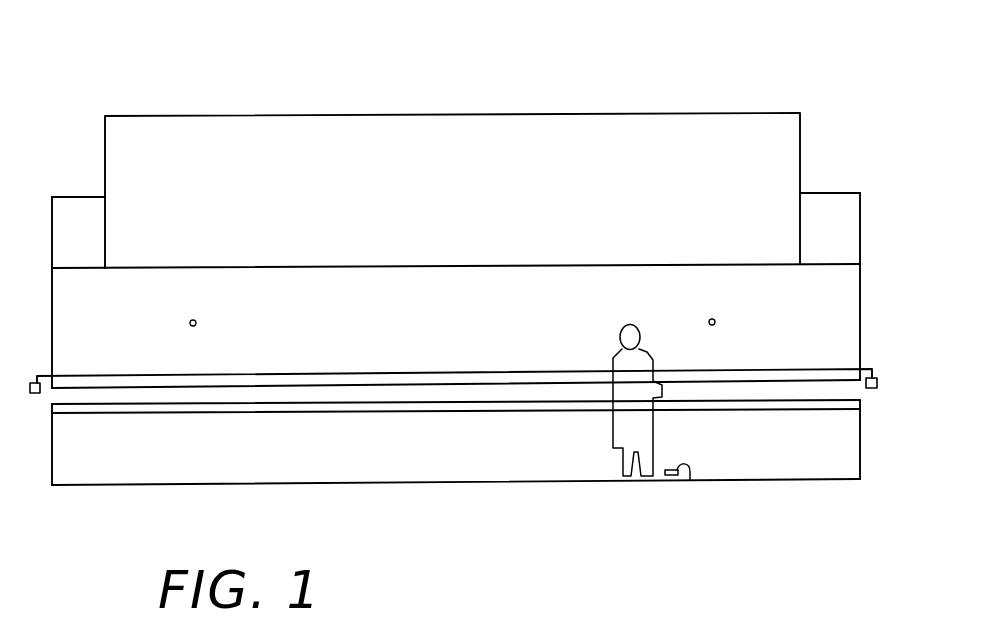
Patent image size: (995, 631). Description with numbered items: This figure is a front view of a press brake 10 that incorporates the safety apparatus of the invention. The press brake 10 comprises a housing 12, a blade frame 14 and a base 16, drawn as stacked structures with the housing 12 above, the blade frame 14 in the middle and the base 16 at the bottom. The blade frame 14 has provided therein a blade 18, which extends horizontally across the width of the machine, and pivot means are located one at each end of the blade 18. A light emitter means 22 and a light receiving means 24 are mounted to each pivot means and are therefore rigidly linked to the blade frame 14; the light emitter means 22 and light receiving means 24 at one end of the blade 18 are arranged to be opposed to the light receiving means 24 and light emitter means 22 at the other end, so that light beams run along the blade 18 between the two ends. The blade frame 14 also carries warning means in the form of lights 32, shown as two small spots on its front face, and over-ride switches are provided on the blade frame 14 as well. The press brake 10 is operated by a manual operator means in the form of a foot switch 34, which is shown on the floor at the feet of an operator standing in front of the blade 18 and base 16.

The press brake 10 is at (508, 60).
The housing 12 is at (622, 114).
The blade frame 14 is at (71, 197).
The base 16 is at (764, 480).
The blade 18 is at (319, 381).
The light emitter means 22 is at (34, 395).
The light receiving means 24 is at (877, 391).
The lights 32 is at (189, 321).
The foot switch 34 is at (690, 480).